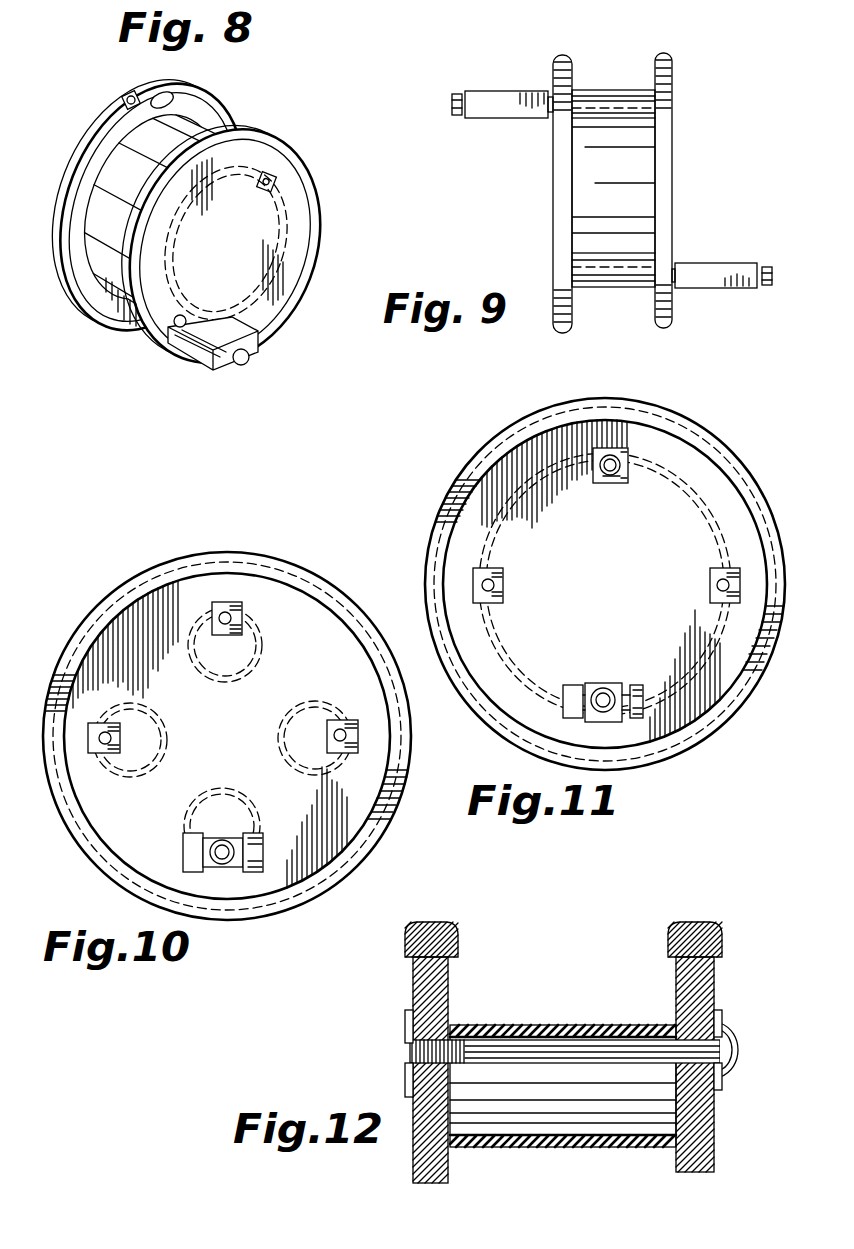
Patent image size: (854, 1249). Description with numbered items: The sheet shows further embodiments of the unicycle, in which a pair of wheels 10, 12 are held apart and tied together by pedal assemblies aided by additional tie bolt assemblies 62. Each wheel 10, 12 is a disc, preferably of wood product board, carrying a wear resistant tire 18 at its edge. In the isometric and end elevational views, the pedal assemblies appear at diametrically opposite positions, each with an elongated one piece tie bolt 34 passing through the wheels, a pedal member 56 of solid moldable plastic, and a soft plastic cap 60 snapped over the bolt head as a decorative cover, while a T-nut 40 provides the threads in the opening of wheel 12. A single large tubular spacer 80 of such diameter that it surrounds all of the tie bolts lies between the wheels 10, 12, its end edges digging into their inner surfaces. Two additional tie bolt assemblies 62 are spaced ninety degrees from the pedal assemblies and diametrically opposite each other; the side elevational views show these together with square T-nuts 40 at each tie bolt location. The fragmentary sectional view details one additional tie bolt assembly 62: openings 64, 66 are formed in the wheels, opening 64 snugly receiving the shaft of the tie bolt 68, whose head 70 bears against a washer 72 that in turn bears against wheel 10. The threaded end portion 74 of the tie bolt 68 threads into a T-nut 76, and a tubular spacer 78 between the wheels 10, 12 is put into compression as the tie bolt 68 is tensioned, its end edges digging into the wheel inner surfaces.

In FIG. 8, the wheel 10 is at (250, 273).
In FIG. 9, the wheel 10 is at (670, 177).
In FIG. 10, the wheel 10 is at (140, 858).
In FIG. 11, the wheel 10 is at (495, 465).
In FIG. 12, the wheel 10 is at (708, 988).
In FIG. 8, the wheel 12 is at (118, 167).
In FIG. 9, the wheel 12 is at (555, 187).
In FIG. 12, the wheel 12 is at (412, 975).
In FIG. 8, the wear resistant tire 18 is at (220, 97).
In FIG. 9, the wear resistant tire 18 is at (565, 53).
In FIG. 11, the wear resistant tire 18 is at (545, 410).
In FIG. 12, the wear resistant tire 18 is at (423, 922).
In FIG. 9, the tie bolt 34 is at (610, 107).
In FIG. 10, the T-nut 40 is at (242, 610).
In FIG. 11, the T-nut 40 is at (617, 455).
In FIG. 8, the pedal member 56 is at (200, 360).
In FIG. 9, the pedal member 56 is at (495, 108).
In FIG. 10, the pedal member 56 is at (263, 842).
In FIG. 11, the pedal member 56 is at (567, 718).
In FIG. 8, the cap 60 is at (253, 357).
In FIG. 9, the cap 60 is at (455, 117).
In FIG. 10, the cap 60 is at (213, 852).
In FIG. 11, the cap 60 is at (620, 703).
In FIG. 10, the additional tie bolt assembly 62 is at (348, 712).
In FIG. 11, the additional tie bolt assembly 62 is at (498, 558).
In FIG. 12, the additional tie bolt assembly 62 is at (543, 1002).
In FIG. 12, the opening 64 is at (673, 1053).
In FIG. 12, the opening 66 is at (443, 1080).
In FIG. 12, the tie bolt 68 is at (560, 1052).
In FIG. 12, the head 70 is at (737, 1043).
In FIG. 12, the washer 72 is at (720, 1083).
In FIG. 12, the threaded end portion 74 is at (408, 1055).
In FIG. 12, the T-nut 76 is at (410, 1020).
In FIG. 12, the tubular spacer 78 is at (478, 1025).
In FIG. 8, the tubular spacer 80 is at (113, 320).
In FIG. 9, the tubular spacer 80 is at (587, 200).
In FIG. 11, the tubular spacer 80 is at (685, 480).